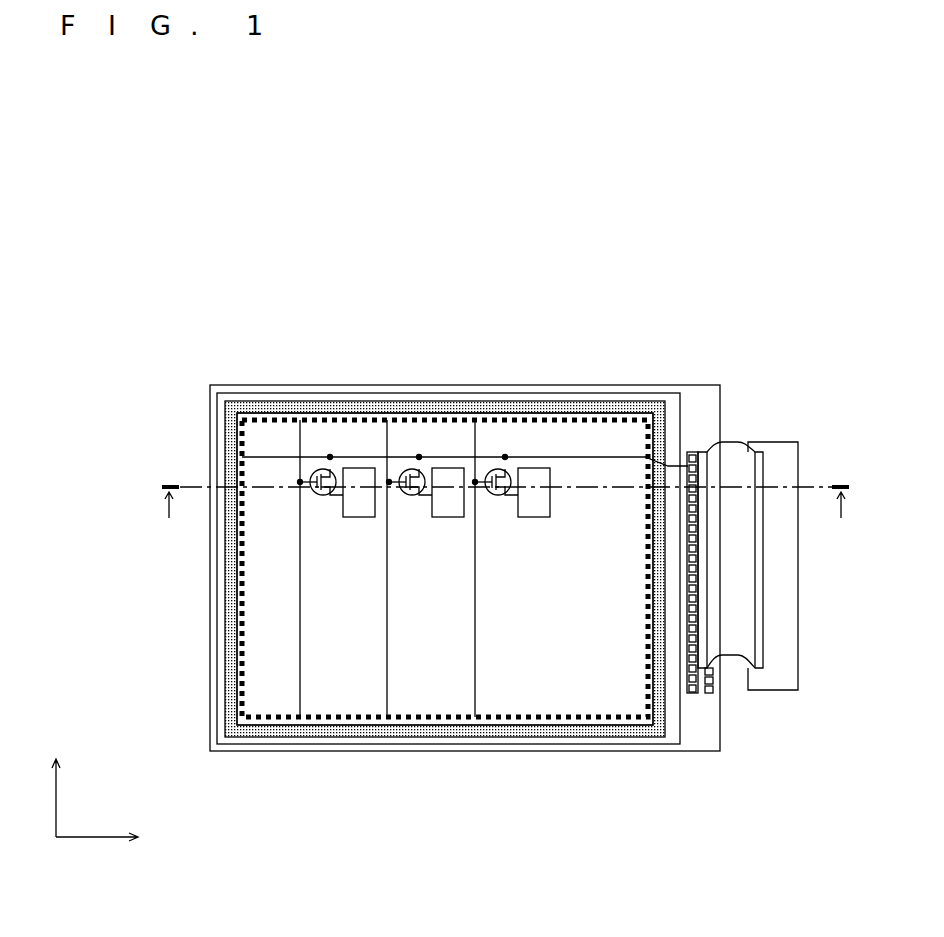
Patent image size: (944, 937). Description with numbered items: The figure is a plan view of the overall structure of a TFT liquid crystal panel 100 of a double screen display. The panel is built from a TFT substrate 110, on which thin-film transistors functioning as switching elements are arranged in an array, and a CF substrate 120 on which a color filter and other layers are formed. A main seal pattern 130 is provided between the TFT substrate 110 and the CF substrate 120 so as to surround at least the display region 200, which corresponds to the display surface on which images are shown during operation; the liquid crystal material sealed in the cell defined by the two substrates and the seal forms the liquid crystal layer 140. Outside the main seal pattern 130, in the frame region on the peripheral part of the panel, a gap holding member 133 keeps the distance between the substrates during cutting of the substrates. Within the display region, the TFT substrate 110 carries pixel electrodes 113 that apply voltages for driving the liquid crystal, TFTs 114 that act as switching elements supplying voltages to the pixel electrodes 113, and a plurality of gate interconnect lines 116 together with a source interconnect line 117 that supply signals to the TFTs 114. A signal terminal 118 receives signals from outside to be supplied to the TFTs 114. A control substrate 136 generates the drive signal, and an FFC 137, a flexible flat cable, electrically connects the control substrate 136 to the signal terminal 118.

The liquid crystal panel 100 is at (627, 233).
The TFT substrate 110 is at (722, 705).
The CF substrate 120 is at (681, 728).
The main seal pattern 130 is at (349, 722).
The gap holding member 133 is at (232, 385).
The liquid crystal layer 140 is at (553, 692).
The display region 200 is at (240, 678).
The gate interconnect line 116 is at (300, 591).
The source interconnect line 117 is at (268, 457).
The TFT 114 is at (408, 453).
The pixel electrode 113 is at (449, 468).
The signal terminal 118 is at (690, 452).
The FFC 137 is at (728, 460).
The control substrate 136 is at (780, 462).